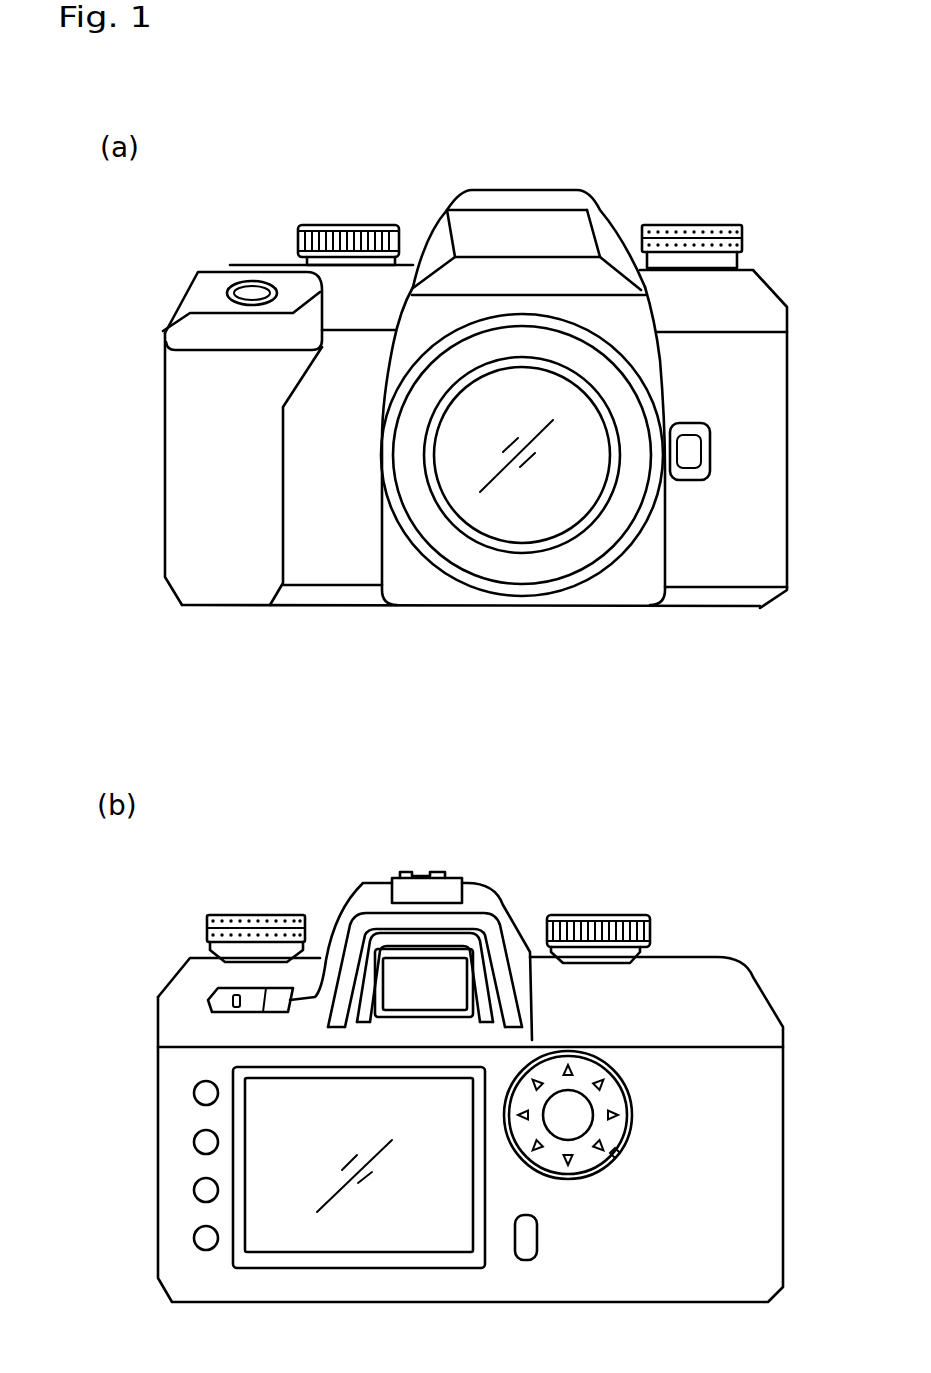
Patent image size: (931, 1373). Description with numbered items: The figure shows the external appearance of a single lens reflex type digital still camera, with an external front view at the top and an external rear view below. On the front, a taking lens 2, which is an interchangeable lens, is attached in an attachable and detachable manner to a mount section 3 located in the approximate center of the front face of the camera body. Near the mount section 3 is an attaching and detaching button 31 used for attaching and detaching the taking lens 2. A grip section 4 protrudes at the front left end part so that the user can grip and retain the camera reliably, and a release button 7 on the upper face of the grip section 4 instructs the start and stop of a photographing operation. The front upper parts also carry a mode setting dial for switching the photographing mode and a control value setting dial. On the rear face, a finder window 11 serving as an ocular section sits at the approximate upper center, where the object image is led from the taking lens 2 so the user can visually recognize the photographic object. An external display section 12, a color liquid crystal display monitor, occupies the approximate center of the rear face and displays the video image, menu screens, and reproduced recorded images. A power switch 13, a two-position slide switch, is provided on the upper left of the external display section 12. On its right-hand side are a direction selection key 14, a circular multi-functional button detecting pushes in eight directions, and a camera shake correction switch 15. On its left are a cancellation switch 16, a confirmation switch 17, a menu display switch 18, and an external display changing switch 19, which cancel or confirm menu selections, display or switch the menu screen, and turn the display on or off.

The taking lens 2 is at (561, 567).
The mount section 3 is at (511, 598).
The grip section 4 is at (192, 425).
The release button 7 is at (253, 290).
The finder window 11 is at (397, 968).
The external display section 12 is at (353, 1228).
The power switch 13 is at (208, 1007).
The direction selection key 14 is at (557, 1178).
The camera shake correction switch 15 is at (523, 1262).
The cancellation switch 16 is at (194, 1093).
The confirmation switch 17 is at (194, 1142).
The menu display switch 18 is at (194, 1190).
The external display changing switch 19 is at (194, 1238).
The attaching and detaching button 31 is at (692, 457).